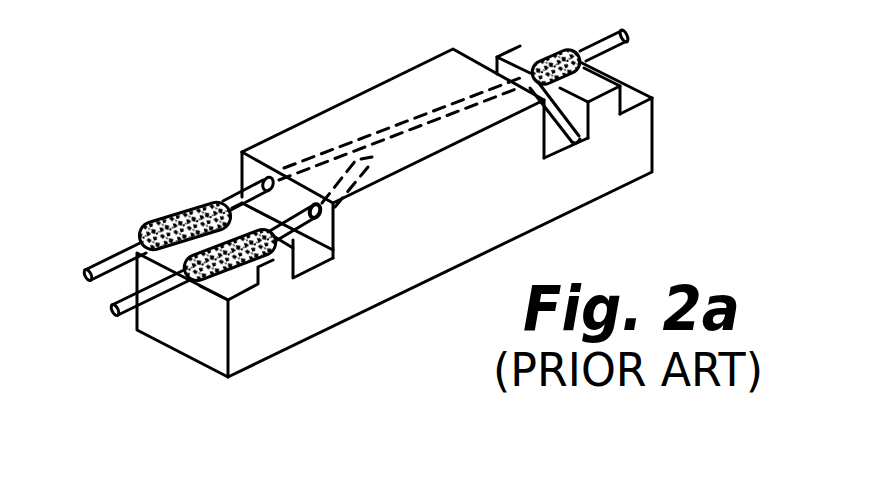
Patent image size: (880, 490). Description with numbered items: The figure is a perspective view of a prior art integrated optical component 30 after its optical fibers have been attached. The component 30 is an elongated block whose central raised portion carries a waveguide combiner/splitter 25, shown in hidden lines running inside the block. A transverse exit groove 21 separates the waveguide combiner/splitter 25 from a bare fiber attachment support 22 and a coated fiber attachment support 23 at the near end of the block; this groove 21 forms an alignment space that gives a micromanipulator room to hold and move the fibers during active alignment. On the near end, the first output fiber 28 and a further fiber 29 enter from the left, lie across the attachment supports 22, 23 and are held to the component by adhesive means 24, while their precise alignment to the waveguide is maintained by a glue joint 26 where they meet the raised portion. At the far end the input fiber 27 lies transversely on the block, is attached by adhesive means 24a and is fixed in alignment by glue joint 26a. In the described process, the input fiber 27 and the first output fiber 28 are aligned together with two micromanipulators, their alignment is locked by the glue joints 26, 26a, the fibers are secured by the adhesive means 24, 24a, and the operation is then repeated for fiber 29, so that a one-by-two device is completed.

The transverse exit groove 21 is at (307, 260).
The bare fiber attachment support 22 is at (283, 256).
The coated fiber attachment support 23 is at (222, 289).
The adhesive means 24 is at (153, 228).
The adhesive means 24a is at (526, 60).
The waveguide combiner/splitter 25 is at (462, 110).
The glue joint 26 is at (261, 183).
The glue joint 26a is at (575, 135).
The input fiber 27 is at (629, 31).
The first output fiber 28 is at (108, 259).
The fiber 29 is at (112, 301).
The optical component 30 is at (461, 222).